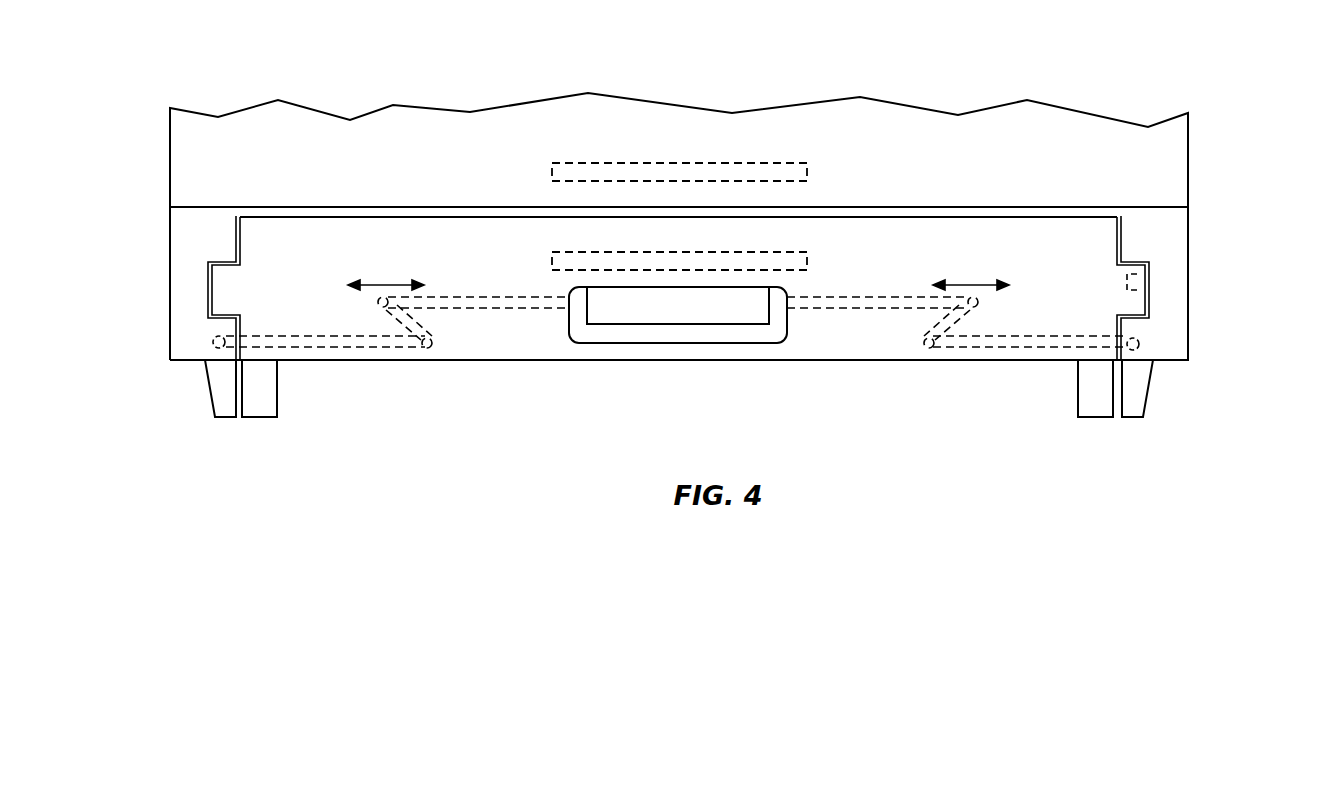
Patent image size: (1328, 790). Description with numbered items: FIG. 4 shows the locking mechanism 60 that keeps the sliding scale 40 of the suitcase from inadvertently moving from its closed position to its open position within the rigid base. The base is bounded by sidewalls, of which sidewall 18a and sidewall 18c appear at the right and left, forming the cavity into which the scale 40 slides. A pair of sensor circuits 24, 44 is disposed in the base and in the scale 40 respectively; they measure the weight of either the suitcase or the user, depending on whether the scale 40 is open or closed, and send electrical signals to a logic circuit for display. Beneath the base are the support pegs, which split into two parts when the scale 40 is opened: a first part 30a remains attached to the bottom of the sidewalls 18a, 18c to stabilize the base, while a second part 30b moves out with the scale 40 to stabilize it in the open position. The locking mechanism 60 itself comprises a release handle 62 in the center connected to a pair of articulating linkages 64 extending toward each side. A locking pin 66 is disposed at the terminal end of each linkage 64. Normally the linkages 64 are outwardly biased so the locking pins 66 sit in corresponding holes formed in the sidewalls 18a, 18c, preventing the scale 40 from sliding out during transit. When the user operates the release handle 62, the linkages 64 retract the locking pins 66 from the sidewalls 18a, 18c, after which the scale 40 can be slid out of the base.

The sidewall 18a is at (1167, 245).
The sidewall 18c is at (190, 240).
The sensor circuit 24 is at (763, 175).
The first part of support peg 30a is at (218, 393).
The second part of support peg 30b is at (262, 402).
The scale 40 is at (332, 262).
The sensor circuit 44 is at (575, 262).
The locking mechanism 60 is at (963, 268).
The release handle 62 is at (687, 305).
The articulating linkage 64 is at (350, 342).
The locking pin 66 is at (215, 340).